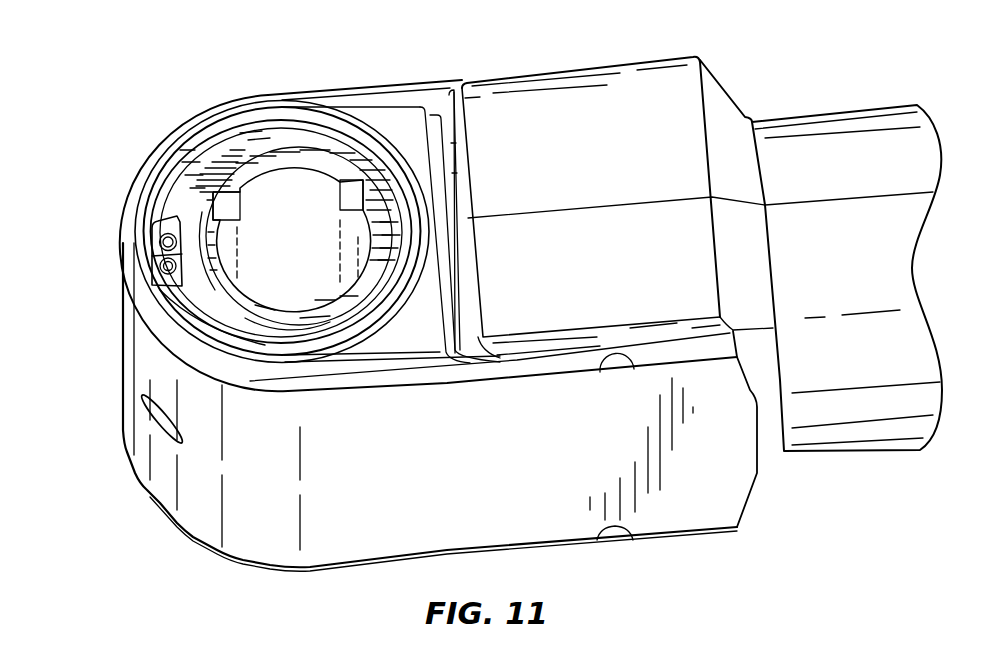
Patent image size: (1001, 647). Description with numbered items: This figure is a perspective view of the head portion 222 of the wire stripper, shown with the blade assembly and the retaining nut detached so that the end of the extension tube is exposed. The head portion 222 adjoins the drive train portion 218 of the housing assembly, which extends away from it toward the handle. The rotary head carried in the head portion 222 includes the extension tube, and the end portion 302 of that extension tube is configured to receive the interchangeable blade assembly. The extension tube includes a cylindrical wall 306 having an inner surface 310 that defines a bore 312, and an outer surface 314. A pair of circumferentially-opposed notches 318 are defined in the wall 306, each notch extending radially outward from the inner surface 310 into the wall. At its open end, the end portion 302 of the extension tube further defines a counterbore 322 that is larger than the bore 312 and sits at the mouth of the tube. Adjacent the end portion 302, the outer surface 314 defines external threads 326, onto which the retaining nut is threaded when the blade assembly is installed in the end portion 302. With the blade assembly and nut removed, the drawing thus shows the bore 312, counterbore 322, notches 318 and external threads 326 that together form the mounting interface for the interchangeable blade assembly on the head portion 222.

The drive train portion 218 is at (628, 87).
The head portion 222 is at (247, 103).
The end portion 302 is at (327, 137).
The cylindrical wall 306 is at (327, 138).
The inner surface 310 is at (233, 269).
The bore 312 is at (232, 263).
The outer surface 314 is at (267, 327).
The notches 318 is at (213, 242).
The counterbore 322 is at (268, 163).
The external threads 326 is at (267, 328).